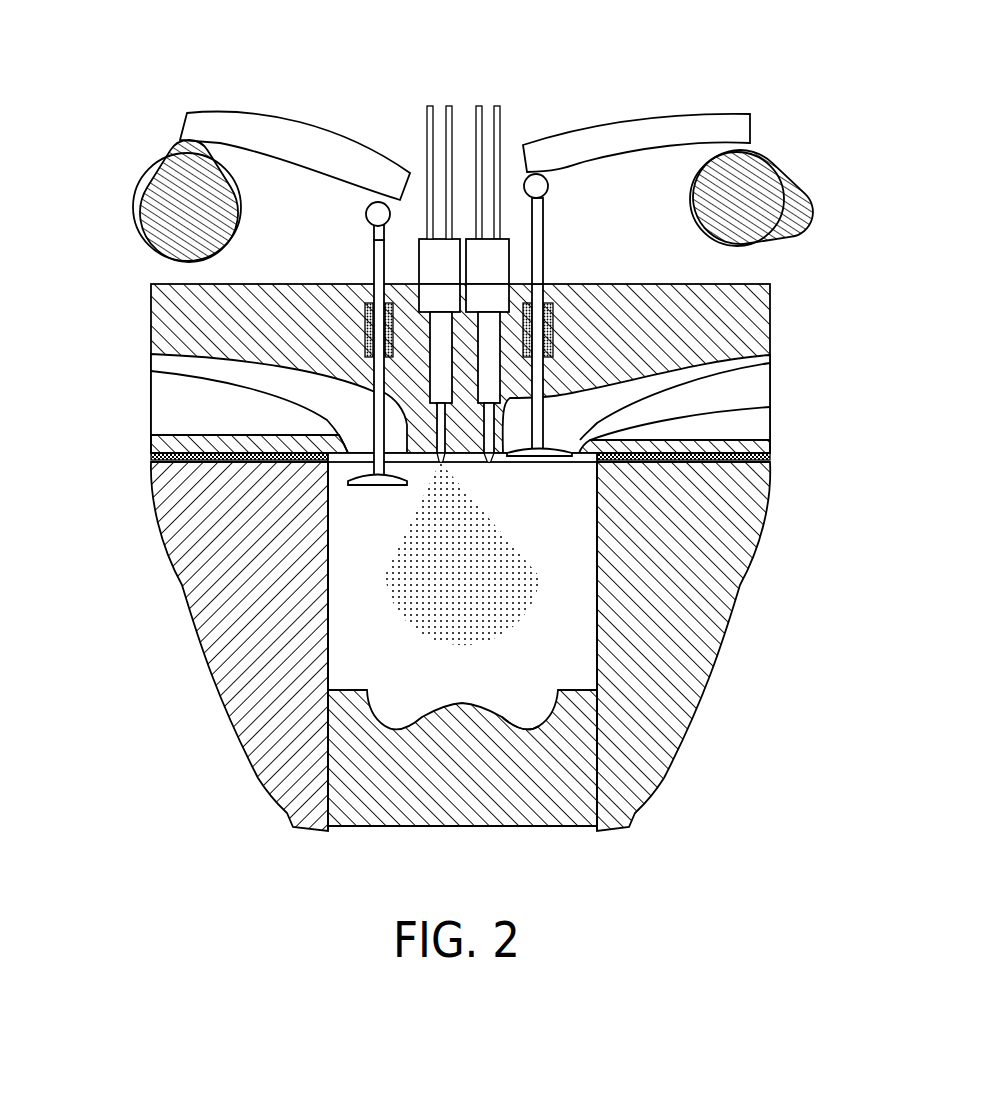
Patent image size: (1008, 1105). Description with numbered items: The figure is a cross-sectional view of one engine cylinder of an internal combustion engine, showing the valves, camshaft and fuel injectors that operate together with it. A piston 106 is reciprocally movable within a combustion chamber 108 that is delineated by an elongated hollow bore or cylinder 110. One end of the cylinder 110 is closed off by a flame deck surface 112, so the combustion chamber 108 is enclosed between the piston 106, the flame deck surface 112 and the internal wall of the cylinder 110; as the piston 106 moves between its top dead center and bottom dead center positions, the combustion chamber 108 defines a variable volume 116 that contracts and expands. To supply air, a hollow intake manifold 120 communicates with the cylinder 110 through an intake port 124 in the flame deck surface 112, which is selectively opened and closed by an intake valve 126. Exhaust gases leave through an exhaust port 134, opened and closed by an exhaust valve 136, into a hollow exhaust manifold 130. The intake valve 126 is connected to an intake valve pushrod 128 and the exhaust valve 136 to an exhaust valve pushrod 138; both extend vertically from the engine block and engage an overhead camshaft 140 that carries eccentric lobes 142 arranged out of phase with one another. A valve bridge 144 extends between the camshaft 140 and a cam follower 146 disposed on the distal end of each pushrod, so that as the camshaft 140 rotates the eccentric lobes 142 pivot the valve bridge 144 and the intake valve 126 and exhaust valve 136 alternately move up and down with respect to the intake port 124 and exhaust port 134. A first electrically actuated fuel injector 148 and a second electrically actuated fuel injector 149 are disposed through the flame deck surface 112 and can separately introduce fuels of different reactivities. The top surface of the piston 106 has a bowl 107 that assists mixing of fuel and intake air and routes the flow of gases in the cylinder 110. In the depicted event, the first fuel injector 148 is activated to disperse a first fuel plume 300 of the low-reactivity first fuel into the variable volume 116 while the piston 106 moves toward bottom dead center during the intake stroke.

The piston 106 is at (500, 780).
The bowl 107 is at (538, 699).
The combustion chamber 108 is at (162, 664).
The cylinder 110 is at (593, 583).
The flame deck surface 112 is at (597, 468).
The variable volume 116 is at (335, 661).
The intake manifold 120 is at (753, 390).
The intake port 124 is at (770, 407).
The intake valve 126 is at (770, 363).
The intake valve pushrod 128 is at (540, 212).
The exhaust manifold 130 is at (172, 397).
The exhaust port 134 is at (151, 371).
The exhaust valve 136 is at (370, 485).
The exhaust valve pushrod 138 is at (374, 263).
The camshaft 140 is at (134, 212).
The eccentric lobe 142 is at (162, 150).
The valve bridge 144 is at (275, 130).
The cam follower 146 is at (433, 267).
The first electrically actuated fuel injector 148 is at (366, 218).
The second electrically actuated fuel injector 149 is at (495, 263).
The first fuel plume 300 is at (453, 593).